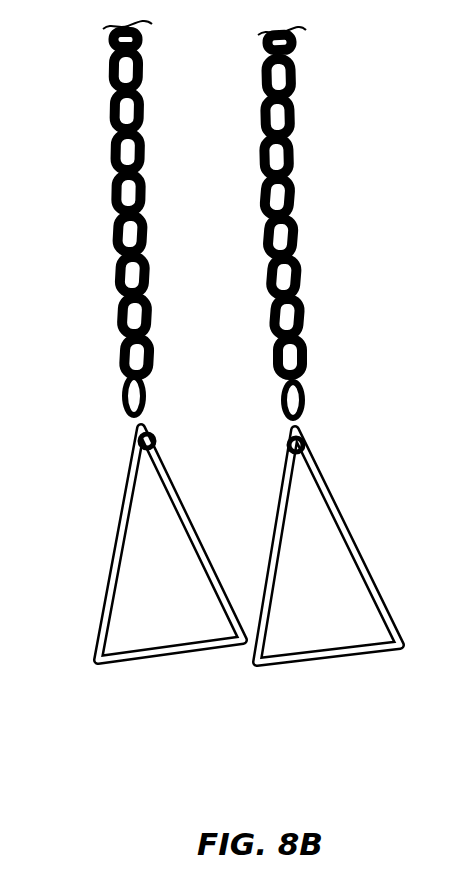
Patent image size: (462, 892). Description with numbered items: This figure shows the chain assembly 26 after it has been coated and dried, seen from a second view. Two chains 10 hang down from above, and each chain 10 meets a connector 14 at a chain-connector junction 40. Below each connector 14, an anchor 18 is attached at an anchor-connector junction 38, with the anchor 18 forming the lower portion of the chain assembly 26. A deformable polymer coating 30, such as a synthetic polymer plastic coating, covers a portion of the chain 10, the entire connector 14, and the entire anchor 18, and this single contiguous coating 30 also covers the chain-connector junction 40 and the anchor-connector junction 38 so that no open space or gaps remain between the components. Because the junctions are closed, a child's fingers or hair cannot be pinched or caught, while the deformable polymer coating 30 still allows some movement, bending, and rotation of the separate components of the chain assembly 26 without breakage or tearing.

The chain 10 is at (103, 118).
The chain-connector junction 40 is at (120, 376).
The connector 14 is at (135, 395).
The anchor-connector junction 38 is at (117, 454).
The deformable polymer coating 30 is at (305, 373).
The anchor 18 is at (207, 657).
The chain assembly 26 is at (388, 692).